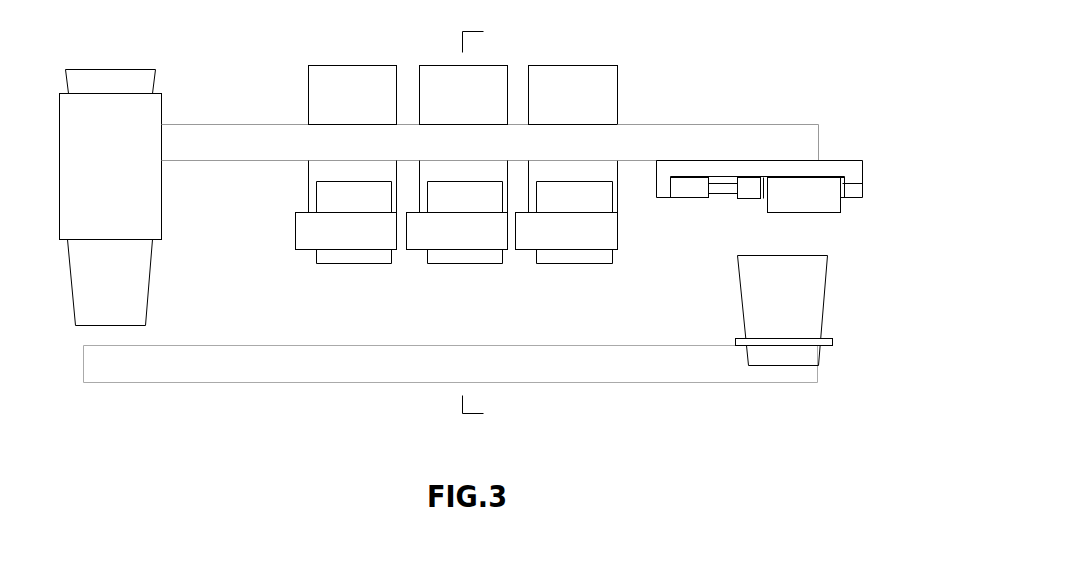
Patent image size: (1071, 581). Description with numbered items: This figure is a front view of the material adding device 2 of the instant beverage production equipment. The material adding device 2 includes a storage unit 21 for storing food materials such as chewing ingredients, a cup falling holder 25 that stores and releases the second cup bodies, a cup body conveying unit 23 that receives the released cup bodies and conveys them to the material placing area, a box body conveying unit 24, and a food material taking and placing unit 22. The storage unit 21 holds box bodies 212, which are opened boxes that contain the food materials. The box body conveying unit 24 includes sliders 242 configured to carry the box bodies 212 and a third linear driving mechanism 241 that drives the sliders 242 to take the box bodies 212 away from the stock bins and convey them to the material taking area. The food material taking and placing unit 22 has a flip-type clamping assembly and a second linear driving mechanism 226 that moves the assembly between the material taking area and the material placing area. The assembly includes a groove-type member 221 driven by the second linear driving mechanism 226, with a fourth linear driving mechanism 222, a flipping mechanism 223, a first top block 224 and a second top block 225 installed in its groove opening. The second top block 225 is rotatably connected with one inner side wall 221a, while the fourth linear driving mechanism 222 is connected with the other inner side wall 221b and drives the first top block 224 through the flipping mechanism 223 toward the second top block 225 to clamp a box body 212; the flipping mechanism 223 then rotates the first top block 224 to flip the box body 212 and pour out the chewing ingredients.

The material adding device 2 is at (66, 36).
The storage unit 21 is at (309, 58).
The box body 212 is at (323, 196).
The food material taking and placing unit 22 is at (777, 137).
The groove-type member 221 is at (800, 167).
The inner side wall 221a is at (671, 193).
The inner side wall 221b is at (848, 186).
The fourth linear driving mechanism 222 is at (697, 180).
The flipping mechanism 223 is at (743, 180).
The first top block 224 is at (762, 185).
The second top block 225 is at (863, 157).
The second linear driving mechanism 226 is at (643, 143).
The cup body conveying unit 23 is at (627, 334).
The box body conveying unit 24 is at (397, 247).
The third linear driving mechanism 241 is at (426, 266).
The slider 242 is at (305, 243).
The cup falling holder 25 is at (77, 197).